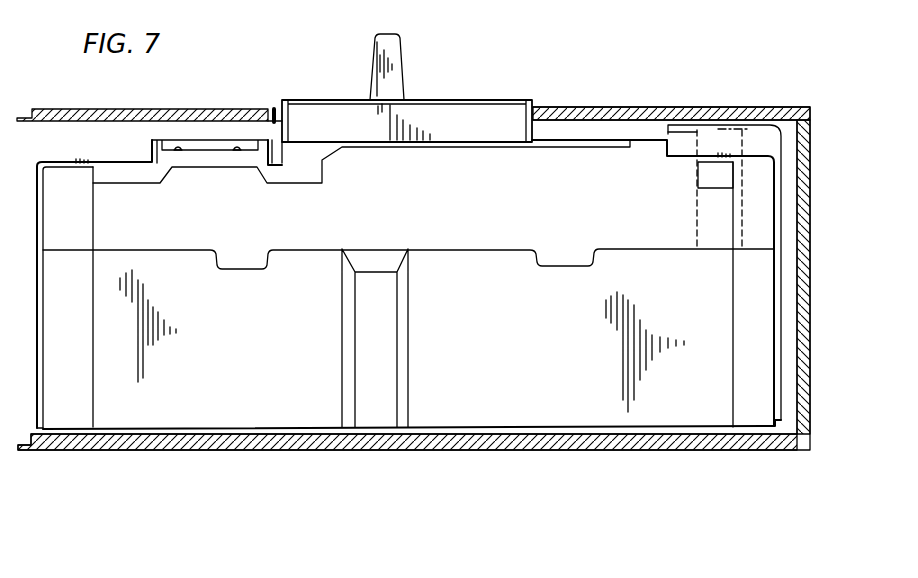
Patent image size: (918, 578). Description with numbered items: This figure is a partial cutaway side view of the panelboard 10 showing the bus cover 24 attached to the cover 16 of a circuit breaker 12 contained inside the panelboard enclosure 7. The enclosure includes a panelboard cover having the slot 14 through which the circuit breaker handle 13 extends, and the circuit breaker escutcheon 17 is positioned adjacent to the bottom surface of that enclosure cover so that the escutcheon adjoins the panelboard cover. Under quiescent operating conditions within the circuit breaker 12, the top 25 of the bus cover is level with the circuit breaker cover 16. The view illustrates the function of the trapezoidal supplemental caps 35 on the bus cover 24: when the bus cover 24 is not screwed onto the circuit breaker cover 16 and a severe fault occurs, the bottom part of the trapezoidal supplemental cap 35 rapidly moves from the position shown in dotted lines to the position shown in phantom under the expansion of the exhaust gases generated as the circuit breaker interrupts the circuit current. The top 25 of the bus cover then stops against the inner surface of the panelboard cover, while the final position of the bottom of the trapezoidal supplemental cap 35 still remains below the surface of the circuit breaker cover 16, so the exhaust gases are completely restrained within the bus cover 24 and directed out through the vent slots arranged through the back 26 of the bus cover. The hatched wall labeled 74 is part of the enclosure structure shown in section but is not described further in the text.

The panelboard enclosure 7 is at (481, 457).
The panelboard 10 is at (229, 490).
The circuit breaker 12 is at (273, 341).
The circuit breaker handle 13 is at (402, 63).
The slot 14 is at (276, 108).
The circuit breaker cover 16 is at (648, 138).
The circuit breaker escutcheon 17 is at (282, 136).
The bus cover 24 is at (773, 299).
The top of the bus cover 25 is at (680, 153).
The back of the bus cover 26 is at (781, 392).
The trapezoidal supplemental cap 35 is at (717, 163).
The top wall 74 is at (590, 107).